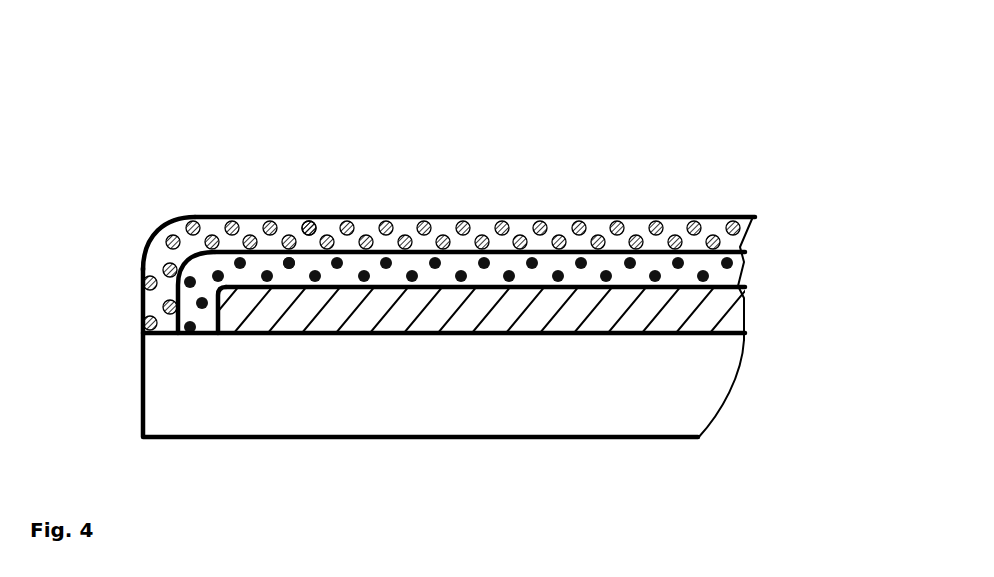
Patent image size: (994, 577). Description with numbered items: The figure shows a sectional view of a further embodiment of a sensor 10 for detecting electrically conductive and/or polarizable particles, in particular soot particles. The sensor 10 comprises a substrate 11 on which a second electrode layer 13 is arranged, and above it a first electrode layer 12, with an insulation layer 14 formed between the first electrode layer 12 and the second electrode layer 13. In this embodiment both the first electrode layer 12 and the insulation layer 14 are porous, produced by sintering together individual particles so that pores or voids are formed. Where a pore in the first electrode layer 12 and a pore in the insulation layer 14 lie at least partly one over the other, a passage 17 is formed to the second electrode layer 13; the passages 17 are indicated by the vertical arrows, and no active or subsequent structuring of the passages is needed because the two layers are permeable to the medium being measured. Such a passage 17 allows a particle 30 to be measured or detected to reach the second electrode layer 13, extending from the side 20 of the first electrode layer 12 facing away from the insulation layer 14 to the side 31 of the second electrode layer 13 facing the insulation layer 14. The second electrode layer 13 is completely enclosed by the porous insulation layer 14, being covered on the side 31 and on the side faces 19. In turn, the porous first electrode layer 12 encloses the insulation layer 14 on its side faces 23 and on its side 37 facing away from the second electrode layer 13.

The sensor 10 is at (513, 97).
The substrate 11 is at (668, 418).
The first electrode layer 12 is at (745, 243).
The second electrode layer 13 is at (745, 321).
The insulation layer 14 is at (740, 279).
The passage 17 is at (283, 280).
The side face of the second electrode layer 19 is at (150, 322).
The side of the first electrode layer facing away from the insulation layer 20 is at (488, 214).
The side face of the insulation layer 23 is at (143, 272).
The particle 30 is at (400, 217).
The side of the second electrode layer facing the insulation layer 31 is at (580, 288).
The side of the insulation layer facing away from the second electrode layer 37 is at (547, 250).